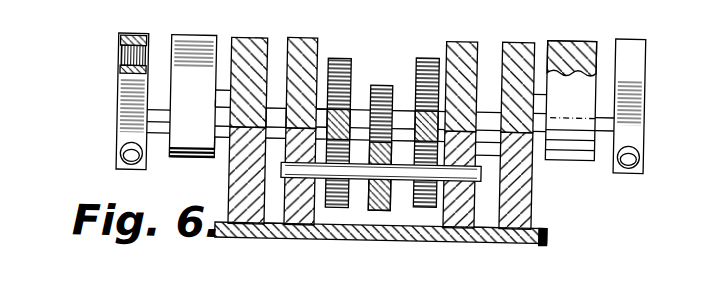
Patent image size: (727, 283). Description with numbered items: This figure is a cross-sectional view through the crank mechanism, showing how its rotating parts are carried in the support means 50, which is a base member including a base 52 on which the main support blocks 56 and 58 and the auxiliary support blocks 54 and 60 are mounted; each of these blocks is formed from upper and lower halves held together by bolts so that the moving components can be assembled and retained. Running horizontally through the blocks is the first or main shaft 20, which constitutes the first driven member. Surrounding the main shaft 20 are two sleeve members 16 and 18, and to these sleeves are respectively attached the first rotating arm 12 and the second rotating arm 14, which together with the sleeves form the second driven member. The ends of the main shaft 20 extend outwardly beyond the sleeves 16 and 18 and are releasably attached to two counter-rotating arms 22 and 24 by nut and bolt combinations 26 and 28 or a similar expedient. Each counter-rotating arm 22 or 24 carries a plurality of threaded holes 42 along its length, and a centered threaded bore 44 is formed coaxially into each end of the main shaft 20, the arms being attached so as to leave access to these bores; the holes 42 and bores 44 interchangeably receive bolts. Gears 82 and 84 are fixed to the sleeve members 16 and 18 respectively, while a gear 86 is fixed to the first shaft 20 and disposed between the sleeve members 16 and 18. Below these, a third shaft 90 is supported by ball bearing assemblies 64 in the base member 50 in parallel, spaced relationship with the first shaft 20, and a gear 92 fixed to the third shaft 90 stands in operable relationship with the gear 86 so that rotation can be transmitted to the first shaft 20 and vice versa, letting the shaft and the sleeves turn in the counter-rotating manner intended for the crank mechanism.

The first rotating arm 12 is at (180, 34).
The second rotating arm 14 is at (561, 32).
The sleeve member 16 is at (227, 173).
The sleeve member 18 is at (532, 154).
The main shaft 20 is at (148, 119).
The counter-rotating arm 22 is at (115, 91).
The counter-rotating arm 24 is at (646, 54).
The nut and bolt combination 26 is at (639, 147).
The nut and bolt combination 28 is at (125, 153).
The threaded holes 42 is at (118, 58).
The centered threaded bore 44 is at (337, 10).
The support means 50 is at (547, 236).
The base 52 is at (547, 221).
The auxiliary support block 54 is at (247, 189).
The main support block 56 is at (302, 214).
The main support block 58 is at (460, 225).
The auxiliary support block 60 is at (534, 209).
The ball bearing assemblies 64 is at (281, 188).
The gear 82 is at (340, 56).
The gear 84 is at (424, 53).
The gear 86 is at (378, 82).
The third shaft 90 is at (405, 175).
The gear 92 is at (378, 212).